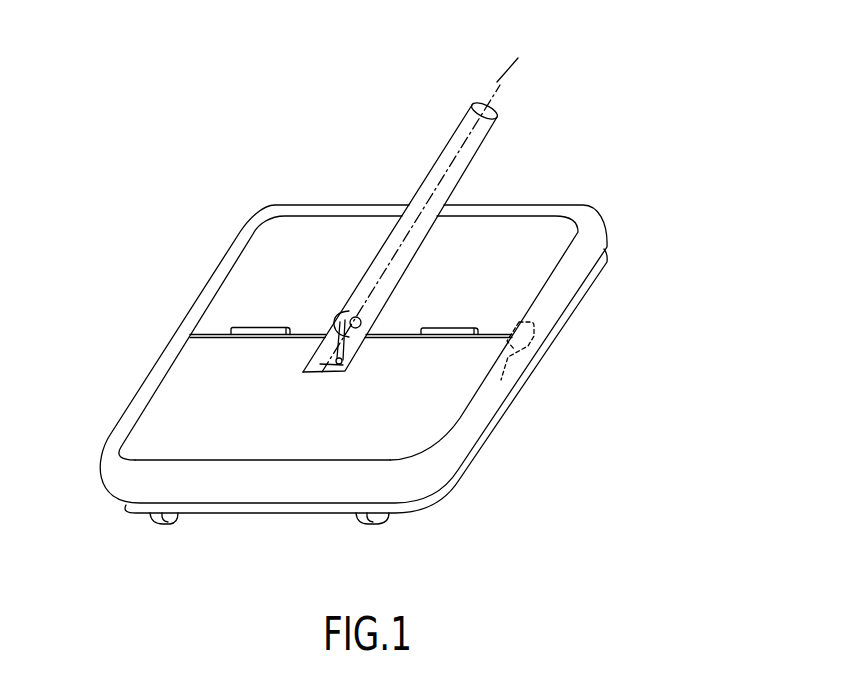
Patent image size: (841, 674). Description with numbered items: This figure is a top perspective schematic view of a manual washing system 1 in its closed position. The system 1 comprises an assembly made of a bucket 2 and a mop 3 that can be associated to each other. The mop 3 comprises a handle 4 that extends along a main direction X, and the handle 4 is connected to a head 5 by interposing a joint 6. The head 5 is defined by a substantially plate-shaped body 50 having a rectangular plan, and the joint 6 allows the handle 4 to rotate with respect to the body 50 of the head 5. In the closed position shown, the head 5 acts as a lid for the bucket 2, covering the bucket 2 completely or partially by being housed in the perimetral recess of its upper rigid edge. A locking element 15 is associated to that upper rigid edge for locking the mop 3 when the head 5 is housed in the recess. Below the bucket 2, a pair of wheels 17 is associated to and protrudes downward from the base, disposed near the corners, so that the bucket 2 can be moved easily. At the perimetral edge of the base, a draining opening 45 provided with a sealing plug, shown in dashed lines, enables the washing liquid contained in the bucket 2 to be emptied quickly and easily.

The system 1 is at (209, 140).
The bucket 2 is at (609, 300).
The mop 3 is at (511, 131).
The handle 4 is at (452, 137).
The head 5 is at (338, 204).
The joint 6 is at (289, 285).
The locking element 15 is at (456, 235).
The wheels 17 is at (366, 520).
The draining opening 45 is at (531, 358).
The plate-shaped body 50 is at (213, 428).
The main direction X is at (507, 72).